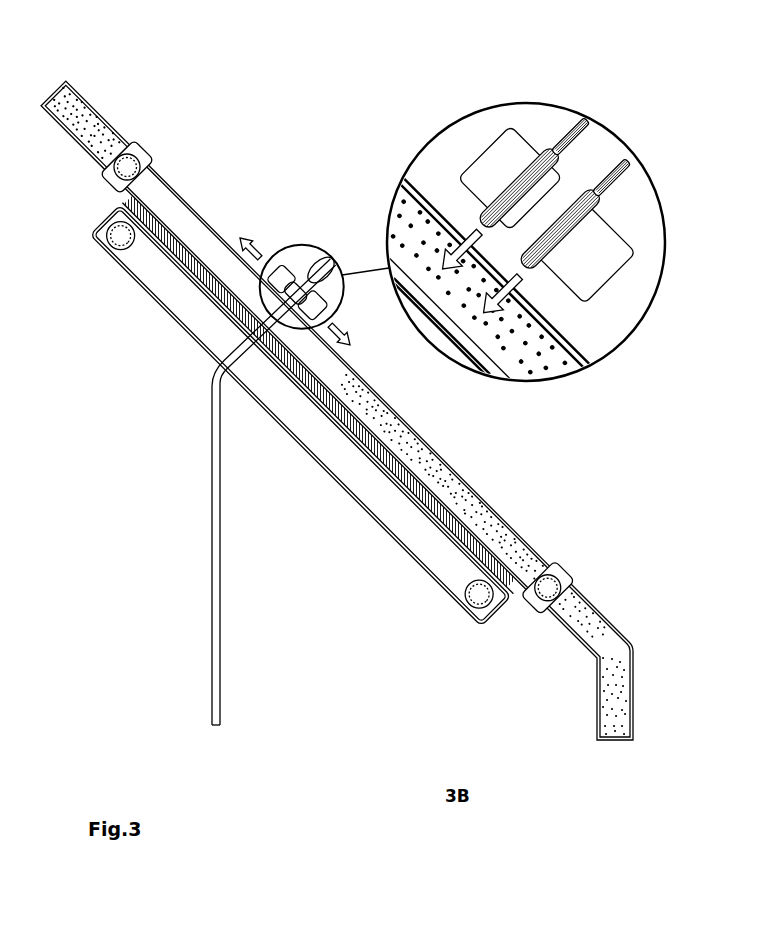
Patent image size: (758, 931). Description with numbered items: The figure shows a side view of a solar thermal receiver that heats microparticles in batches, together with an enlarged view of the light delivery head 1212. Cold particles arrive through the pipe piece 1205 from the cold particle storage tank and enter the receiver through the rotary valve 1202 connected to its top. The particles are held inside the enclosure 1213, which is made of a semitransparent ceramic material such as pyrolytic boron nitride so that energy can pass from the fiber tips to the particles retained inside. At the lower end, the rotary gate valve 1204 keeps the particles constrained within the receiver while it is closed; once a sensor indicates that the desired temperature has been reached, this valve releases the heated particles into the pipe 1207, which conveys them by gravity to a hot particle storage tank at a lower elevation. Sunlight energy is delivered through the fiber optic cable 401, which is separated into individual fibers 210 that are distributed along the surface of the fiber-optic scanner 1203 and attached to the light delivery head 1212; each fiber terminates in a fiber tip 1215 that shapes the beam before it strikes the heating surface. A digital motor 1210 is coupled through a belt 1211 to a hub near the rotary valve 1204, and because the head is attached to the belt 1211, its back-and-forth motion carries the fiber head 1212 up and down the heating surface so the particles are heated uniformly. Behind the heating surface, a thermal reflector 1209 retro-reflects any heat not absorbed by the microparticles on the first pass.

In FIG. 3, the pipe piece 1205 is at (80, 115).
In FIG. 3, the rotary valve 1202 is at (148, 146).
In FIG. 3, the digital motor 1210 is at (104, 247).
In FIG. 3, the belt 1211 is at (158, 306).
In FIG. 3, the fiber optic cable 401 is at (208, 518).
In FIG. 3, the thermal reflector 1209 is at (450, 529).
In FIG. 3, the enclosure 1213 is at (487, 494).
In FIG. 3, the rotary gate valve 1204 is at (565, 563).
In FIG. 3, the pipe 1207 is at (597, 663).
In FIG. 3B, the fiber tip 1215 is at (473, 212).
In FIG. 3B, the light delivery head 1212 is at (510, 155).
In FIG. 3B, the fibers 210 is at (582, 130).
In FIG. 3B, the fiber-optic scanner 1203 is at (625, 230).